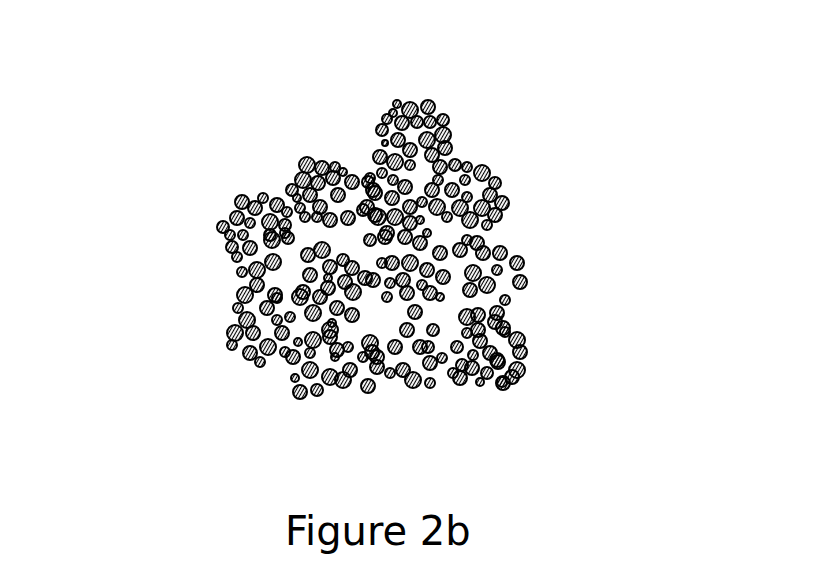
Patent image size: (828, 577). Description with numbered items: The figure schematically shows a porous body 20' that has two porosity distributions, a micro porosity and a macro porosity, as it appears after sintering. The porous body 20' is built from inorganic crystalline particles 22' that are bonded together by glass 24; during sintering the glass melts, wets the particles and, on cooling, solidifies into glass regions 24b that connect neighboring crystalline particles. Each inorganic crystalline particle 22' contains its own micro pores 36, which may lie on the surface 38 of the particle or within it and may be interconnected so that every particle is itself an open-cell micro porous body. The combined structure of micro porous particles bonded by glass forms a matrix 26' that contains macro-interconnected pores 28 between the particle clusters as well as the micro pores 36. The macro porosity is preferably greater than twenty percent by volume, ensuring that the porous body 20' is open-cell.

The porous body 20' is at (412, 258).
The inorganic crystalline particles 22' is at (476, 87).
The glass 24 is at (496, 103).
The glass regions 24b is at (462, 126).
The matrix 26' is at (322, 267).
The macro-interconnected pores 28 is at (360, 313).
The micro pores 36 is at (488, 335).
The surface 38 is at (532, 282).